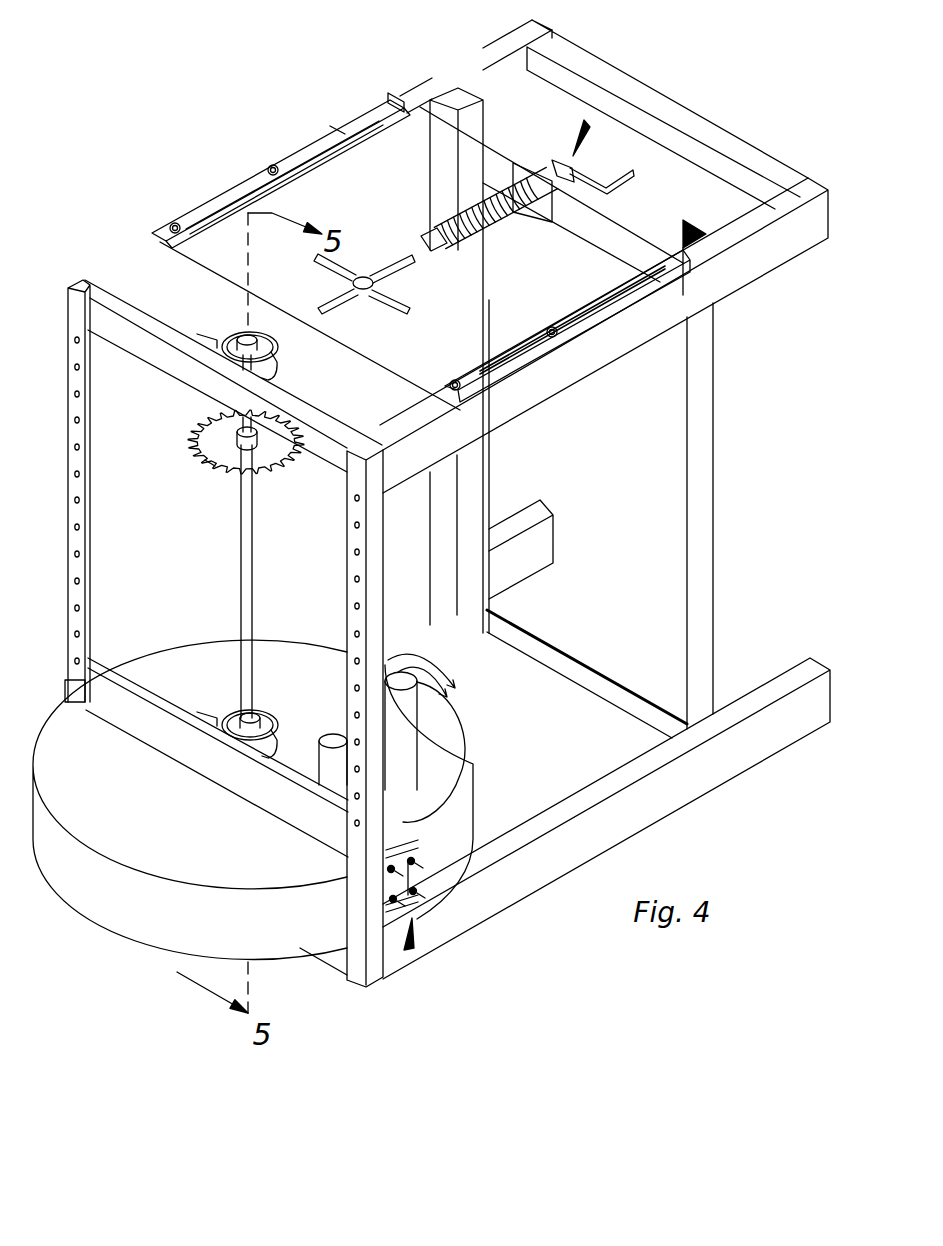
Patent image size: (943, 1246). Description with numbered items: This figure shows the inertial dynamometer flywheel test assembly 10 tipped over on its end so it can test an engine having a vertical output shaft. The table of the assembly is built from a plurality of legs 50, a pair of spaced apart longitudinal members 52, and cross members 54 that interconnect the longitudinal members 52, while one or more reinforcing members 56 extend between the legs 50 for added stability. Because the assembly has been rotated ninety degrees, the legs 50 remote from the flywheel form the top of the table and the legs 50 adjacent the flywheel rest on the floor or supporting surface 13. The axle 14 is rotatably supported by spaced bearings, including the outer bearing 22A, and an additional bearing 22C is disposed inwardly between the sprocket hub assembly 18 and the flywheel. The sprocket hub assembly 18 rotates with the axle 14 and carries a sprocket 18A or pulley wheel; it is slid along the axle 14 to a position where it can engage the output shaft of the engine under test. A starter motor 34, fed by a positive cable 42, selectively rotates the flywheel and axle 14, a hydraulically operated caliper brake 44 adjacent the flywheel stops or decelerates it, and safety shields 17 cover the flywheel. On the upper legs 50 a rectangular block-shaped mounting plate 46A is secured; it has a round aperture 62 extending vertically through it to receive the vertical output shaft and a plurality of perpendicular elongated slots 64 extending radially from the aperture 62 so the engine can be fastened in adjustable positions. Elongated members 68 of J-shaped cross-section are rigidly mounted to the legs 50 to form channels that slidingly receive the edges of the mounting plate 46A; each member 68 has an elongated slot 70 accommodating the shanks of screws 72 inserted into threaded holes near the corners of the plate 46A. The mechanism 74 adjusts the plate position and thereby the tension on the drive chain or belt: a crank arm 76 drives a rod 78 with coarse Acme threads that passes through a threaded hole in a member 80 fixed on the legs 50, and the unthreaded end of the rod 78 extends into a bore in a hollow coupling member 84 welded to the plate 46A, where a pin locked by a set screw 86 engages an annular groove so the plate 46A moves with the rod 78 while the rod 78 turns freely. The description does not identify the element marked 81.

The inertial dynamometer flywheel test assembly 10 is at (197, 88).
The support surface 13 is at (528, 972).
The axle 14 is at (243, 562).
The safety shields 17 is at (133, 933).
The sprocket hub assembly 18 is at (185, 463).
The sprocket 18A is at (217, 470).
The bearing 22A is at (243, 337).
The additional bearing 22C is at (272, 704).
The starter motor 34 is at (410, 750).
The positive cable 42 is at (433, 670).
The caliper brake 44 is at (413, 900).
The mounting plate 46A is at (466, 340).
The legs 50 is at (483, 52).
The longitudinal members 52 is at (72, 463).
The cross members 54 is at (182, 377).
The reinforcing members 56 is at (727, 147).
The round aperture 62 is at (385, 284).
The perpendicular slots 64 is at (345, 275).
The elongated member 68 is at (337, 127).
The elongated slot 70 is at (427, 217).
The screws 72 is at (273, 165).
The mechanism 74 is at (580, 150).
The crank arm 76 is at (590, 182).
The rod 78 is at (548, 168).
The member 80 is at (537, 200).
The support plate 81 is at (612, 232).
The hollow coupling member 84 is at (428, 242).
The set screw 86 is at (340, 125).